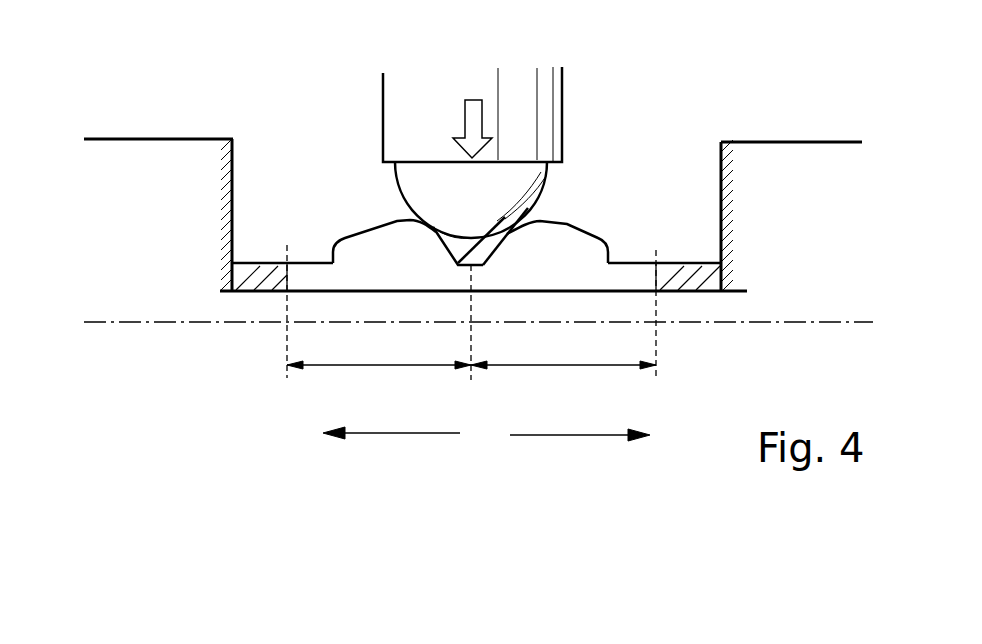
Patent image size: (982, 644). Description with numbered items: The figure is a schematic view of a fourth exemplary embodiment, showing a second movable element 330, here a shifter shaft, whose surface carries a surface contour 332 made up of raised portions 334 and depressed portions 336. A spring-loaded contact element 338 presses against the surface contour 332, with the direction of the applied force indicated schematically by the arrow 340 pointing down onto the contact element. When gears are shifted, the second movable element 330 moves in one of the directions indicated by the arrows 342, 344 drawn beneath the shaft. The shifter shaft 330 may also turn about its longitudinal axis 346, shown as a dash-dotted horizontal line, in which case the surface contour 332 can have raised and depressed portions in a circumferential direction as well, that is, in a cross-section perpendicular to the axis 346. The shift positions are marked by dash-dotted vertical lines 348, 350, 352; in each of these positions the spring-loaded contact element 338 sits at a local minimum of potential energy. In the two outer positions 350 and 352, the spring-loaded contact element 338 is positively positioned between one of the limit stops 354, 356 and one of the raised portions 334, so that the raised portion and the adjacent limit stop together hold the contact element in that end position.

The second movable element 330 is at (148, 139).
The surface contour 332 is at (405, 224).
The raised portions 334 is at (375, 228).
The depressed portions 336 is at (523, 212).
The spring-loaded contact element 338 is at (498, 200).
The arrow 340 is at (474, 118).
The arrow 342 is at (400, 433).
The arrow 344 is at (597, 435).
The longitudinal axis 346 is at (812, 328).
The dash-dotted vertical line 348 is at (472, 378).
The dash-dotted vertical line 350 is at (288, 378).
The dash-dotted vertical line 352 is at (656, 380).
The limit stop 354 is at (225, 210).
The limit stop 356 is at (723, 188).